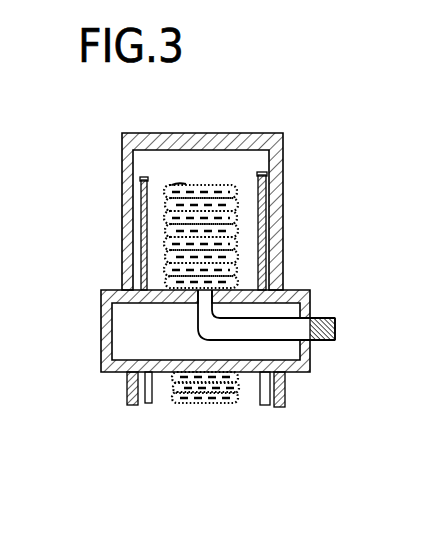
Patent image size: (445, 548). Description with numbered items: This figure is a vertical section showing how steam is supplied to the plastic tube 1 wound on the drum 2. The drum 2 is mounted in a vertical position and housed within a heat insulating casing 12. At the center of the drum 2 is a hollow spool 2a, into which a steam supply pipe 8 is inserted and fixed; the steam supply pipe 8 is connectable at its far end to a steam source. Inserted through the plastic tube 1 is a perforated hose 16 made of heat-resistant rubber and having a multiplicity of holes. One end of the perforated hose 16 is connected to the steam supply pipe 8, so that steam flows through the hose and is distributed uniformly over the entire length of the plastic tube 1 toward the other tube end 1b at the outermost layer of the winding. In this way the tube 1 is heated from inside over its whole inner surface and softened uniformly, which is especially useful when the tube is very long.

The plastic tube 1 is at (164, 221).
The other tube end 1b is at (172, 184).
The drum 2 is at (282, 181).
The hollow spool 2a is at (293, 289).
The steam supply pipe 8 is at (283, 330).
The heat insulating casing 12 is at (276, 206).
The perforated hose 16 is at (203, 405).